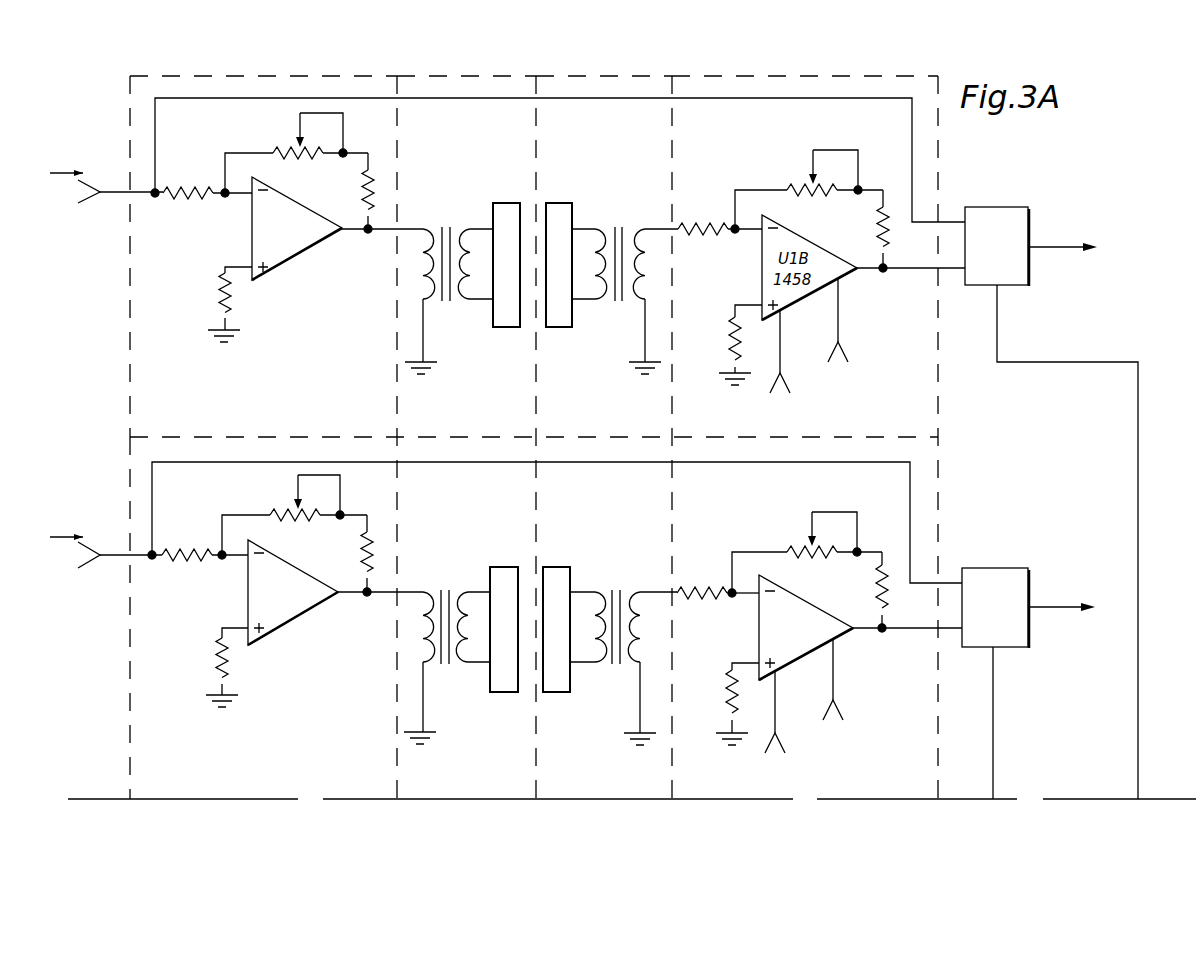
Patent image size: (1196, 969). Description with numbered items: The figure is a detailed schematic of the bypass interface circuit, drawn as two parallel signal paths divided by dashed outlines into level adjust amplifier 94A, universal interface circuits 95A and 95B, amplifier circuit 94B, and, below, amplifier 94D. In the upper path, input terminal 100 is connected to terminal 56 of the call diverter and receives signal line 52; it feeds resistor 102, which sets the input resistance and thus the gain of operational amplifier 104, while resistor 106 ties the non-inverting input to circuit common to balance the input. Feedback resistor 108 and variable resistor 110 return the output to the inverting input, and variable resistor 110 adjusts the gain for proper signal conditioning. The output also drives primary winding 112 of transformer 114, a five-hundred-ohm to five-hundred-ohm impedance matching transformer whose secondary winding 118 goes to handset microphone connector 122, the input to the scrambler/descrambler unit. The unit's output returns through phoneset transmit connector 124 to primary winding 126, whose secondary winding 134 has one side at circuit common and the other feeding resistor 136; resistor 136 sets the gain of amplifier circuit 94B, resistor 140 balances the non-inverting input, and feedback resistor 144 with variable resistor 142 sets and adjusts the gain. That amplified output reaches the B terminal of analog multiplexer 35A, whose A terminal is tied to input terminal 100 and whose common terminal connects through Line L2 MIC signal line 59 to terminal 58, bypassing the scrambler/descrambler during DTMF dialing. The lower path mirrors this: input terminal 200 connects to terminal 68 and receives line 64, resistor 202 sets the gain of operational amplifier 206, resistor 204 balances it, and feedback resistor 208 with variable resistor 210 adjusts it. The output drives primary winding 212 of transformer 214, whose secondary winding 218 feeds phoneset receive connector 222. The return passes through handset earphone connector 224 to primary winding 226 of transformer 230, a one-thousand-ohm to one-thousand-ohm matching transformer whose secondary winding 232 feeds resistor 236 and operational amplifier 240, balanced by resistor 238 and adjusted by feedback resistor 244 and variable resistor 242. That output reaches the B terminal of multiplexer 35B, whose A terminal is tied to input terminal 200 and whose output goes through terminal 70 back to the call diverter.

The analog multiplexer 35A is at (1000, 207).
The multiplexer 35B is at (997, 568).
The signal line 52 is at (214, 100).
The terminal of call diverter 56 is at (75, 188).
The terminal of call diverter 58 is at (1101, 248).
The Line L2 MIC signal line 59 is at (1062, 248).
The line 64 is at (155, 503).
The terminal of call diverter 68 is at (75, 551).
The terminal 70 is at (1073, 607).
The level adjust amplifier 94A is at (173, 73).
The amplifier circuit 94B is at (807, 75).
The amplifier 94D is at (125, 748).
The universal interface circuit 95A is at (450, 75).
The universal interface circuit 95B is at (590, 75).
The input terminal 100 is at (118, 195).
The resistor 102 is at (188, 200).
The operational amplifier 104 is at (297, 253).
The resistor 106 is at (217, 297).
The feedback resistor 108 is at (373, 170).
The variable resistor 110 is at (320, 112).
The primary winding 112 is at (428, 283).
The transformer 114 is at (443, 307).
The secondary winding 118 is at (478, 303).
The handset microphone connector 122 is at (521, 203).
The phoneset transmit connector 124 is at (572, 203).
The primary winding 126 is at (593, 305).
The secondary winding 134 is at (640, 303).
The resistor 136 is at (697, 217).
The resistor 140 is at (718, 340).
The variable resistor 142 is at (833, 150).
The feedback resistor 144 is at (880, 222).
The input terminal 200 is at (113, 560).
The resistor 202 is at (185, 563).
The resistor 204 is at (215, 660).
The operational amplifier 206 is at (288, 623).
The feedback resistor 208 is at (373, 537).
The variable resistor 210 is at (297, 477).
The primary winding 212 is at (423, 653).
The transformer 214 is at (443, 587).
The secondary winding 218 is at (468, 667).
The phoneset receive connector 222 is at (503, 693).
The handset earphone connector 224 is at (572, 567).
The primary winding 226 is at (593, 667).
The transformer 230 is at (618, 592).
The secondary winding 232 is at (637, 667).
The resistor 236 is at (703, 583).
The resistor 238 is at (720, 693).
The operational amplifier 240 is at (812, 657).
The variable resistor 242 is at (833, 512).
The feedback resistor 244 is at (878, 587).